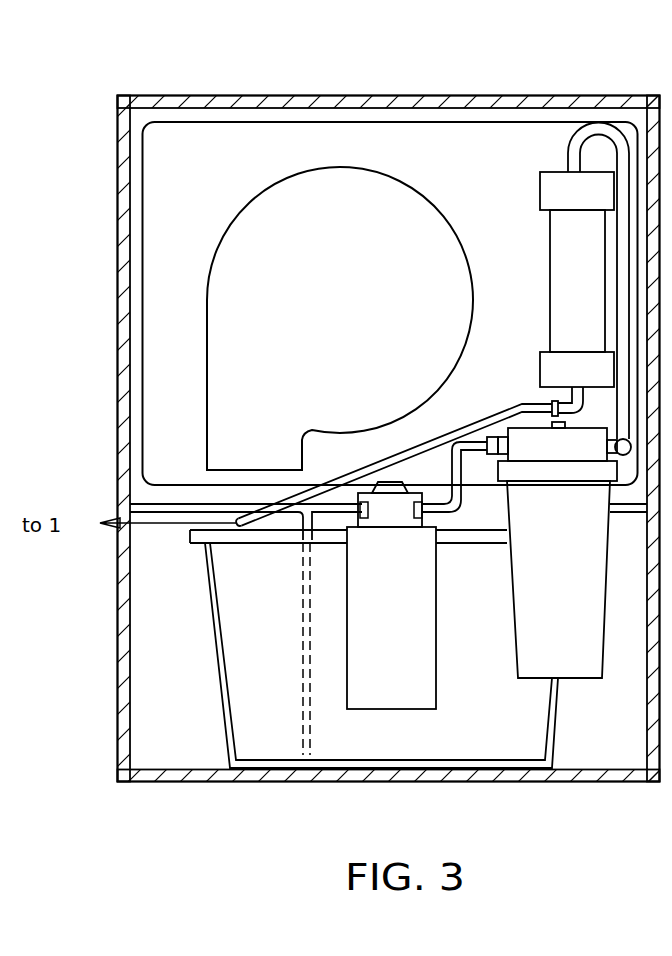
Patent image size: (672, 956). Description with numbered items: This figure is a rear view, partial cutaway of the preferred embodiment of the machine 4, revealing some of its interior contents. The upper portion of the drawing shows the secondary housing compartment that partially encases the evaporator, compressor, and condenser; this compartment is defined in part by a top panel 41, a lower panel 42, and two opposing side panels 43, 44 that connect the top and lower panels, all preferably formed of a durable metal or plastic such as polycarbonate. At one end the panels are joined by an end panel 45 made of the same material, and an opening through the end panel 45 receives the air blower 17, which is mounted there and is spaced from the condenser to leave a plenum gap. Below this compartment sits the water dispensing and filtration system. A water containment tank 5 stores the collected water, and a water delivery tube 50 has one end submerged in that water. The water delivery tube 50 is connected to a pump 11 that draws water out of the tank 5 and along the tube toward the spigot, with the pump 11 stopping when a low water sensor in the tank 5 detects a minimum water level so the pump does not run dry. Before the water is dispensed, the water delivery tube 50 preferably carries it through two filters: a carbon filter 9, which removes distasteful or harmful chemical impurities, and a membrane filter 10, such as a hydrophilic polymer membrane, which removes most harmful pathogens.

The water purification apparatus 4 is at (330, 439).
The water containment tank 5 is at (236, 592).
The carbon filter 9 is at (575, 605).
The membrane filter 10 is at (593, 305).
The pump 11 is at (412, 605).
The air blower 17 is at (368, 308).
The top panel 41 is at (344, 118).
The lower panel 42 is at (142, 491).
The side panel 43 is at (636, 130).
The side panel 44 is at (143, 322).
The end panel 45 is at (165, 210).
The water delivery tube 50 is at (448, 433).